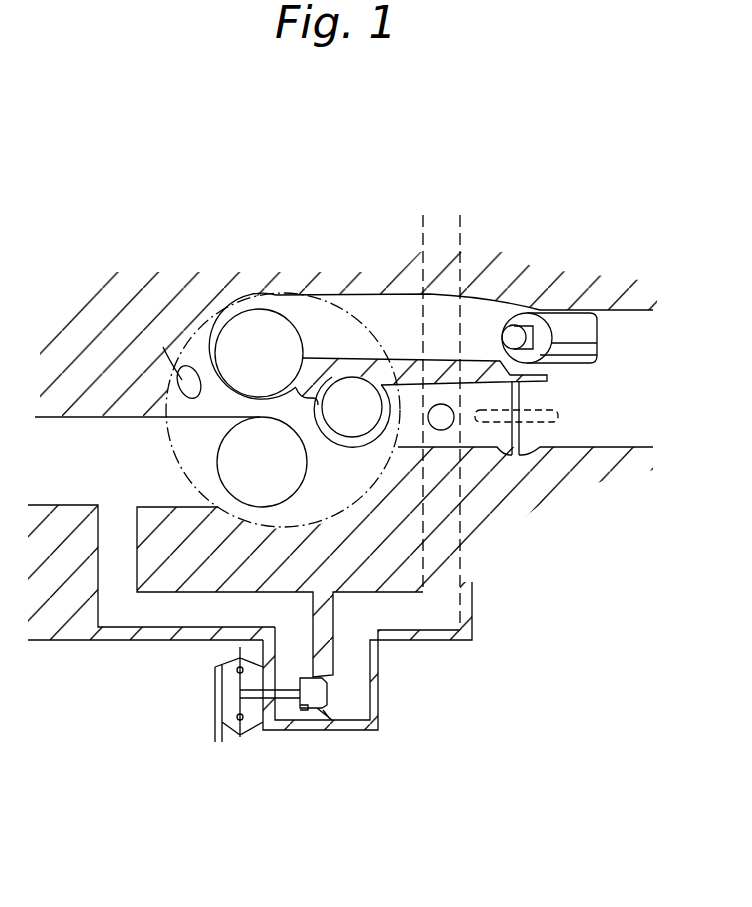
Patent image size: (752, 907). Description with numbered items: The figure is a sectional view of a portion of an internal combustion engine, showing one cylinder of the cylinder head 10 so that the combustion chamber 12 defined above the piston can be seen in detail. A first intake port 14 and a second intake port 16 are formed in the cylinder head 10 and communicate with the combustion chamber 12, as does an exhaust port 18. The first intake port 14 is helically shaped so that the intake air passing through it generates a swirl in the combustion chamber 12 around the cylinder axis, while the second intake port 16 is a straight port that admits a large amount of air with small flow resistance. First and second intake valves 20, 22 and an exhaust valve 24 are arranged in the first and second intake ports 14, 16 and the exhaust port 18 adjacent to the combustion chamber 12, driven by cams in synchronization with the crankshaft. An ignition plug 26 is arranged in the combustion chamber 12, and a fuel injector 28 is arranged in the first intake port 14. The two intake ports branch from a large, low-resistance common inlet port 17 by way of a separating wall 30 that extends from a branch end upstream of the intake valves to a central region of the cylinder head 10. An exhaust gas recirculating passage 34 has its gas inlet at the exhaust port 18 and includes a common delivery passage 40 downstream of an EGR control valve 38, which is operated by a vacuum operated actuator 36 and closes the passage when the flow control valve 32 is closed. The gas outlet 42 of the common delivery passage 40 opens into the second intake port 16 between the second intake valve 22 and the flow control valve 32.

The cylinder head 10 is at (283, 268).
The combustion chamber 12 is at (200, 333).
The first intake port 14 is at (384, 297).
The second intake port 16 is at (410, 393).
The common inlet port 17 is at (648, 402).
The exhaust port 18 is at (110, 427).
The first intake valve 20 is at (277, 357).
The second intake valve 22 is at (370, 413).
The exhaust valve 24 is at (277, 475).
The ignition plug 26 is at (166, 416).
The fuel injector 28 is at (572, 327).
The separating wall 30 is at (473, 367).
The flow control valve 32 is at (517, 442).
The exhaust gas recirculating (EGR) passage 34 is at (150, 615).
The vacuum operated actuator 36 is at (222, 695).
The EGR control valve 38 is at (303, 710).
The common delivery passage 40 is at (447, 612).
The gas outlet 42 is at (440, 425).